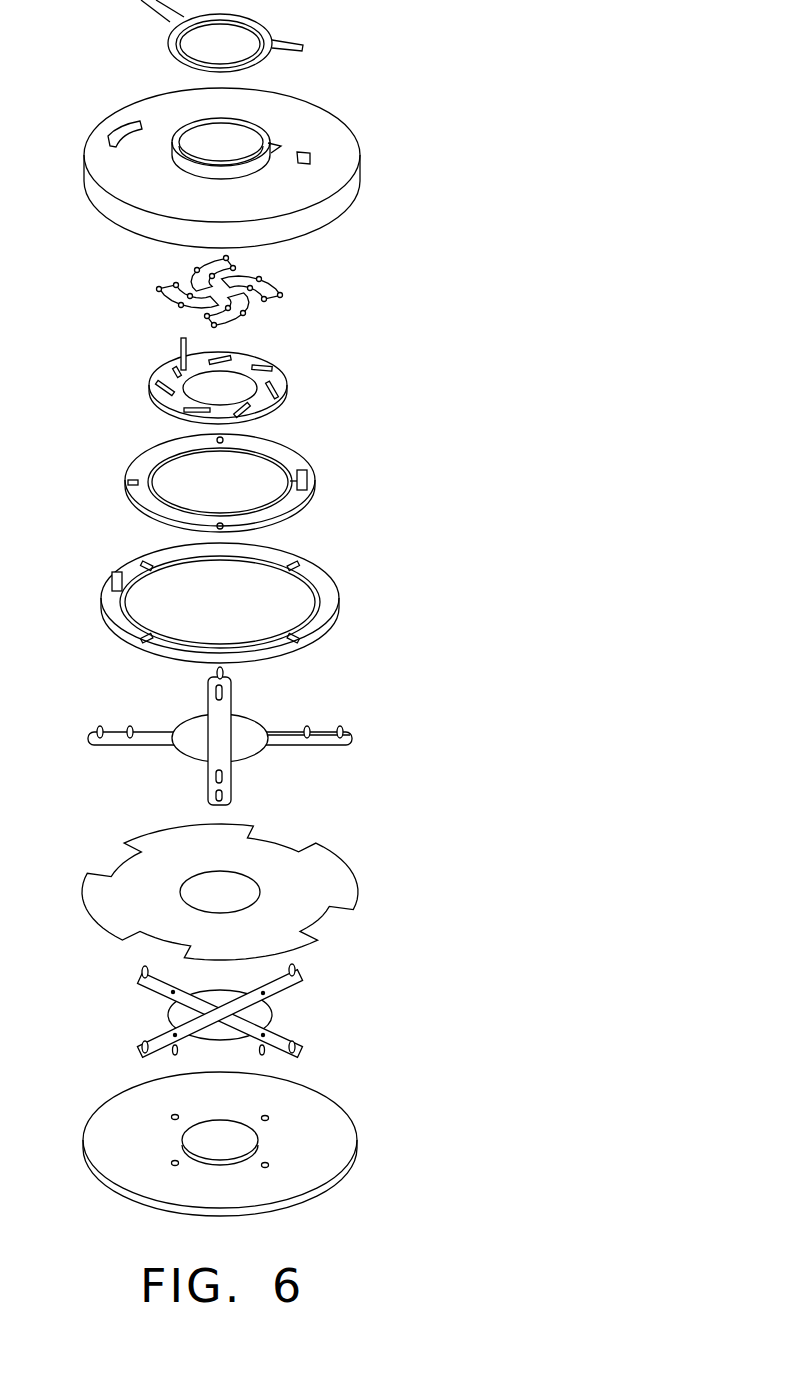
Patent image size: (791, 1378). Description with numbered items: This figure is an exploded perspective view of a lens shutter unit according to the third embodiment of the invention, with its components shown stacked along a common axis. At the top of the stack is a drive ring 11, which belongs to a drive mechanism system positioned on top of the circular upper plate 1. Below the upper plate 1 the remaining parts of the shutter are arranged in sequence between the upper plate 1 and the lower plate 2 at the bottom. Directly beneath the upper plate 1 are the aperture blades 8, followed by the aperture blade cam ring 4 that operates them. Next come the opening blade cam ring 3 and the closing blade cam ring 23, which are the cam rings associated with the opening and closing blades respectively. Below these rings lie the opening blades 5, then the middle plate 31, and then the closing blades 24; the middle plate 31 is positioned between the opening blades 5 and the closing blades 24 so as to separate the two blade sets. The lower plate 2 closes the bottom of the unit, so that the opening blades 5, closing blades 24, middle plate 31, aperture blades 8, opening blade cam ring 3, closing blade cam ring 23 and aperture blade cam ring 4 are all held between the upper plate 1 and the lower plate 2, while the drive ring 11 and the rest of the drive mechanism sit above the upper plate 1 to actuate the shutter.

The drive ring 11 is at (268, 35).
The upper plate 1 is at (318, 138).
The aperture blades 8 is at (262, 273).
The aperture blade cam ring 4 is at (280, 380).
The opening blade cam ring 3 is at (297, 460).
The closing blade cam ring 23 is at (328, 597).
The opening blades 5 is at (248, 728).
The middle plate 31 is at (322, 880).
The closing blades 24 is at (255, 1017).
The lower plate 2 is at (318, 1147).